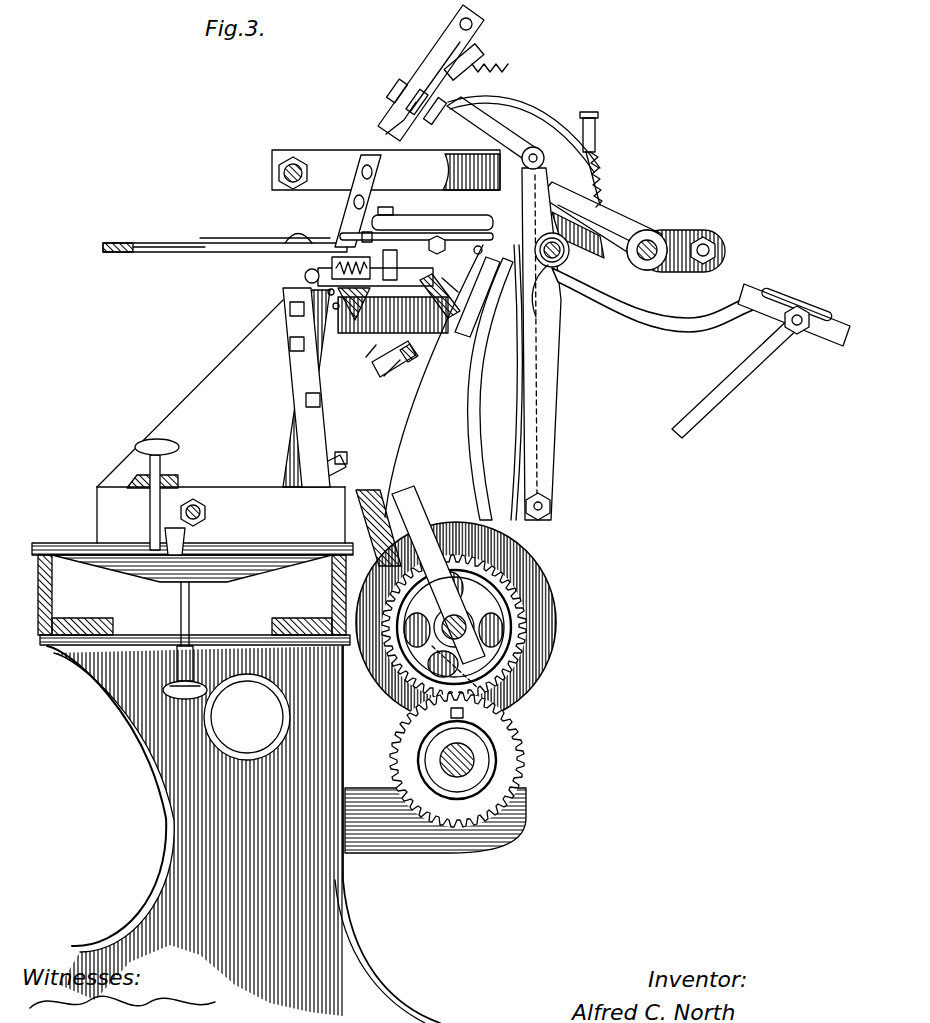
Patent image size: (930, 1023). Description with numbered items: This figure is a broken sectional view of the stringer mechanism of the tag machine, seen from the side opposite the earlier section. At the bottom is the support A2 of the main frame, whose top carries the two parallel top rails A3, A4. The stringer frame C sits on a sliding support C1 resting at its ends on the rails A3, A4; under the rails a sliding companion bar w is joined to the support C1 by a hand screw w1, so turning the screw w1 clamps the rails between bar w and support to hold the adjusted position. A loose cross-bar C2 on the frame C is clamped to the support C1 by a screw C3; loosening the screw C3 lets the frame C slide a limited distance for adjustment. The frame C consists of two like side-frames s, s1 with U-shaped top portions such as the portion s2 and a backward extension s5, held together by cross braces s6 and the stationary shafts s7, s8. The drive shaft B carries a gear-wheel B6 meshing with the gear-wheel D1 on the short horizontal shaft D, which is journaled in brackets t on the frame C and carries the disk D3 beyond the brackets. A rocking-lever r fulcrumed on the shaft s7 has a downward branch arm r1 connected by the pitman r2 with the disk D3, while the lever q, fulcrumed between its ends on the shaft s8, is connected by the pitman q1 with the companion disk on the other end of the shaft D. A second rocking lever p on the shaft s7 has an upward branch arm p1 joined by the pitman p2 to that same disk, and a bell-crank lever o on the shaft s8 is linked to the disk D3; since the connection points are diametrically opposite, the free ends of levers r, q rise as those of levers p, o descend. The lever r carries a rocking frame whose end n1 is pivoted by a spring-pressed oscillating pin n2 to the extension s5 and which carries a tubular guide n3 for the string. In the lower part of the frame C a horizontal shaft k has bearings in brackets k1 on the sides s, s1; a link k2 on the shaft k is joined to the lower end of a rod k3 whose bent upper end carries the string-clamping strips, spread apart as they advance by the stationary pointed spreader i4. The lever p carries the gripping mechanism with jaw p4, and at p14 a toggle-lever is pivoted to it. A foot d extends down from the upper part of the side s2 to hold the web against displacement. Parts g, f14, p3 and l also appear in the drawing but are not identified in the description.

The support A2 is at (243, 834).
The top rail A3 is at (60, 592).
The top rail A4 is at (300, 615).
The sliding companion bar w is at (242, 642).
The hand screw w1 is at (165, 692).
The drive shaft B is at (440, 755).
The gear-wheel B6 is at (505, 760).
The short horizontal shaft D is at (465, 625).
The gear-wheel D1 is at (502, 657).
The disk D3 is at (540, 574).
The bracket t is at (505, 643).
The horizontal shaft k is at (302, 477).
The bracket k1 is at (310, 434).
The link k2 is at (330, 479).
The rod k3 is at (376, 384).
The frame C is at (339, 170).
The sliding support C1 is at (242, 565).
The loose cross-bar C2 is at (138, 482).
The screw C3 is at (157, 440).
The side-frame s is at (225, 243).
The side-frame s1 is at (240, 355).
The U-shaped top portion s2 is at (278, 170).
The backward extending part s5 is at (705, 237).
The cross brace s6 is at (193, 500).
The stationary shaft s7 is at (660, 263).
The stationary shaft s8 is at (568, 262).
The foot d is at (343, 228).
The arm g is at (428, 58).
The screws f14 is at (458, 130).
The rocking-lever r is at (450, 218).
The branch arm r1 is at (464, 292).
The rod or pitman r2 is at (478, 449).
The bell-crank lever o is at (463, 120).
The rocking lever p is at (474, 290).
The branch arm p1 is at (490, 220).
The rod or pitman p2 is at (533, 147).
The nut p3 is at (429, 246).
The jaw p4 is at (305, 275).
The pivot point p14 is at (482, 247).
The end of lever n1 is at (597, 128).
The oscillating pin n2 is at (600, 176).
The tubular guide n3 is at (543, 92).
The guide-finger or spreader i4 is at (370, 250).
The link l is at (392, 356).
The lever q is at (628, 328).
The rod or pitman q1 is at (700, 422).